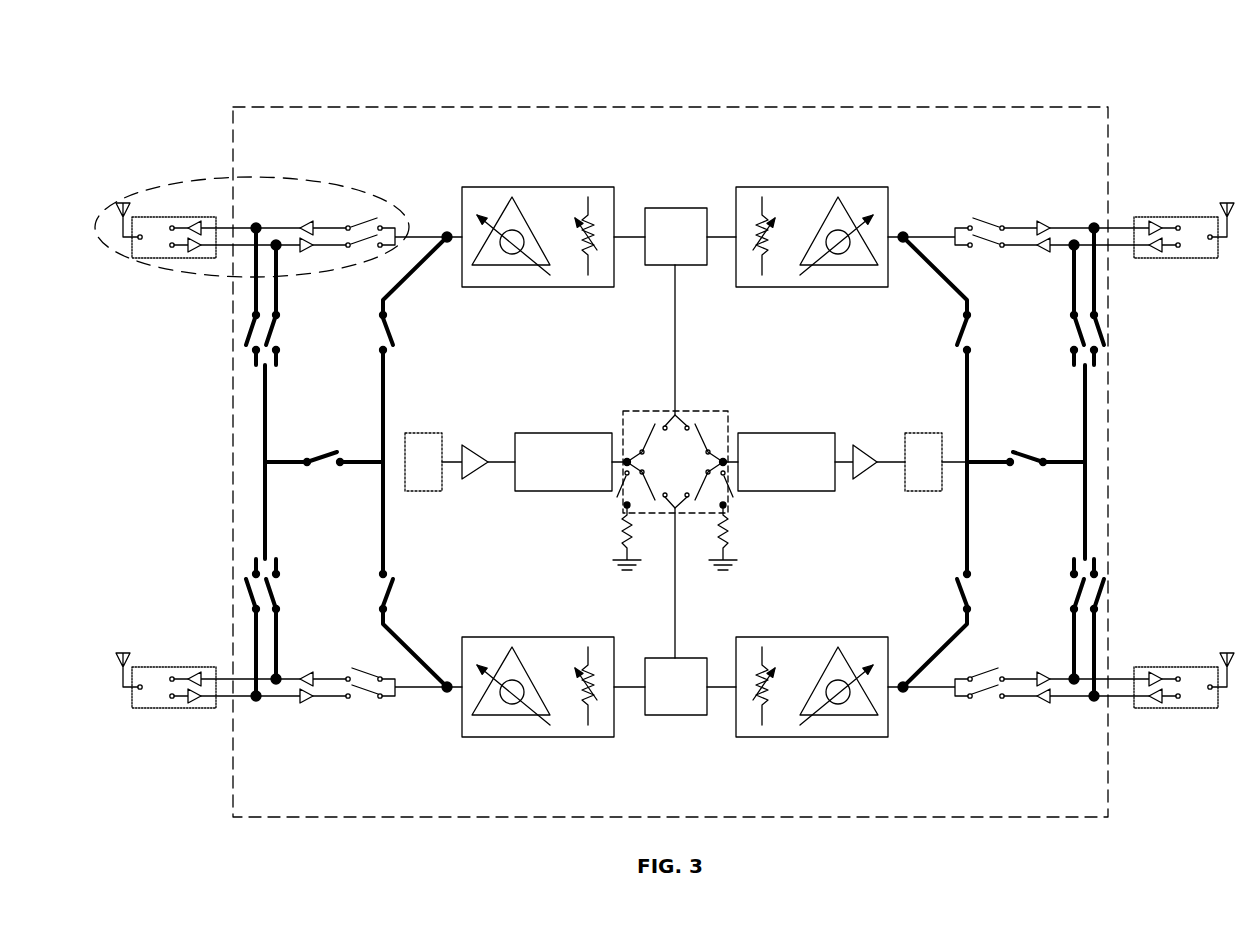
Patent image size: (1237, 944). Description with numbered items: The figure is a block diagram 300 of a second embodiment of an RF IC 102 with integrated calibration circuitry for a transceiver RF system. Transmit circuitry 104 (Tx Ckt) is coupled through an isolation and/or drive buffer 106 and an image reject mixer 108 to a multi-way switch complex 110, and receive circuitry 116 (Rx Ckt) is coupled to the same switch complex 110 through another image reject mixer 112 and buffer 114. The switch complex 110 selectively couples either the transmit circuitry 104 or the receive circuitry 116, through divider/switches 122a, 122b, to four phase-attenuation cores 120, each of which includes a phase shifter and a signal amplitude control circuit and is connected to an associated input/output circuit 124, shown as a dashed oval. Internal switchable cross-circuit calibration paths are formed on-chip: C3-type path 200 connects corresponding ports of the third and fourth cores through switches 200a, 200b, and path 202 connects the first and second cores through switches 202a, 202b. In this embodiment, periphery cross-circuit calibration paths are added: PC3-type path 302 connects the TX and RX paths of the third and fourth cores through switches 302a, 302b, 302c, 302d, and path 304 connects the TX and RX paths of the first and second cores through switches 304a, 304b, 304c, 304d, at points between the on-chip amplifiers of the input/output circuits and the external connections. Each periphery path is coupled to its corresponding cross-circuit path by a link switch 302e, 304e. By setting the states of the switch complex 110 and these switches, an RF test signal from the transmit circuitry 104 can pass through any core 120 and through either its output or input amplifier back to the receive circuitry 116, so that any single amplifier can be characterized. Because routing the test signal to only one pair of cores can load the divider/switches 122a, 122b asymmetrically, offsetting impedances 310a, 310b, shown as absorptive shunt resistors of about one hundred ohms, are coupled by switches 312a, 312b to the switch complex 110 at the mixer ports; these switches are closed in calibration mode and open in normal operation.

The block diagram 300 is at (166, 67).
The RF IC 102 is at (1108, 137).
The input/output circuit 124 is at (157, 185).
The phase-attenuation core 120 is at (460, 189).
The divider/switch 122a is at (680, 208).
The divider/switch 122b is at (678, 715).
The transmit circuitry 104 is at (425, 432).
The isolation and/or drive buffer 106 is at (475, 443).
The image reject mixer 108 is at (538, 432).
The multi-way switch complex 110 is at (683, 488).
The image reject mixer 112 is at (815, 493).
The isolation and/or drive buffer 114 is at (870, 480).
The receive circuitry 116 is at (921, 493).
The switch 312a is at (612, 497).
The switch 312b is at (738, 497).
The offsetting impedance 310a is at (612, 558).
The offsetting impedance 310b is at (738, 553).
The cross-circuit calibration path 200 is at (383, 407).
The switch 200a is at (398, 330).
The switch 200b is at (398, 600).
The cross-circuit calibration path 202 is at (967, 415).
The switch 202a is at (950, 330).
The switch 202b is at (950, 598).
The periphery cross-circuit calibration path 302 is at (265, 508).
The switch 302a is at (242, 322).
The switch 302b is at (278, 330).
The switch 302c is at (242, 600).
The switch 302d is at (278, 598).
The link switch 302e is at (330, 478).
The periphery cross-circuit calibration path 304 is at (1085, 508).
The switch 304a is at (1065, 330).
The switch 304b is at (1108, 326).
The switch 304c is at (1065, 598).
The switch 304d is at (1108, 598).
The link switch 304e is at (1013, 478).